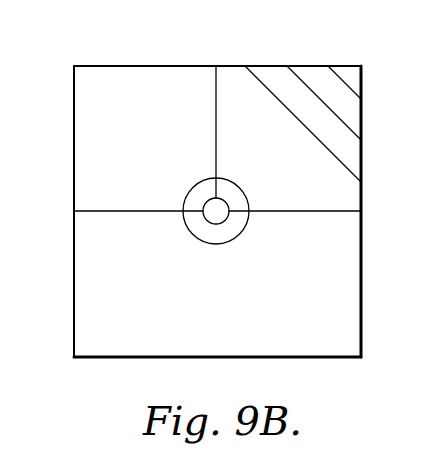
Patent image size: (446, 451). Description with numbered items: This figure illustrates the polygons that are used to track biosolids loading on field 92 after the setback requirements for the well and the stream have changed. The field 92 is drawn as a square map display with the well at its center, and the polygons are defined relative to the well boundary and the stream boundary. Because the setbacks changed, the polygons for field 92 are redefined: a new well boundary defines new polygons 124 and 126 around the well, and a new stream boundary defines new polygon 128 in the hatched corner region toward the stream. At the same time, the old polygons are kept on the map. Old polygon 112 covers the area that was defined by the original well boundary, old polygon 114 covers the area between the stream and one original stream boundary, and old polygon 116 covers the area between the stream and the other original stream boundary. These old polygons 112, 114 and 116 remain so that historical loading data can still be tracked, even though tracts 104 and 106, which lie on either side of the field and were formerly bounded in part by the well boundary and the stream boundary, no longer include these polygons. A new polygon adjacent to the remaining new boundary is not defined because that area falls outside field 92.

The field 92 is at (103, 303).
The tract 104 is at (90, 172).
The tract 106 is at (328, 191).
The polygon 112 is at (227, 223).
The polygon 114 is at (325, 73).
The polygon 116 is at (348, 73).
The new polygon 124 is at (198, 197).
The new polygon 126 is at (233, 193).
The new polygon 128 is at (268, 75).